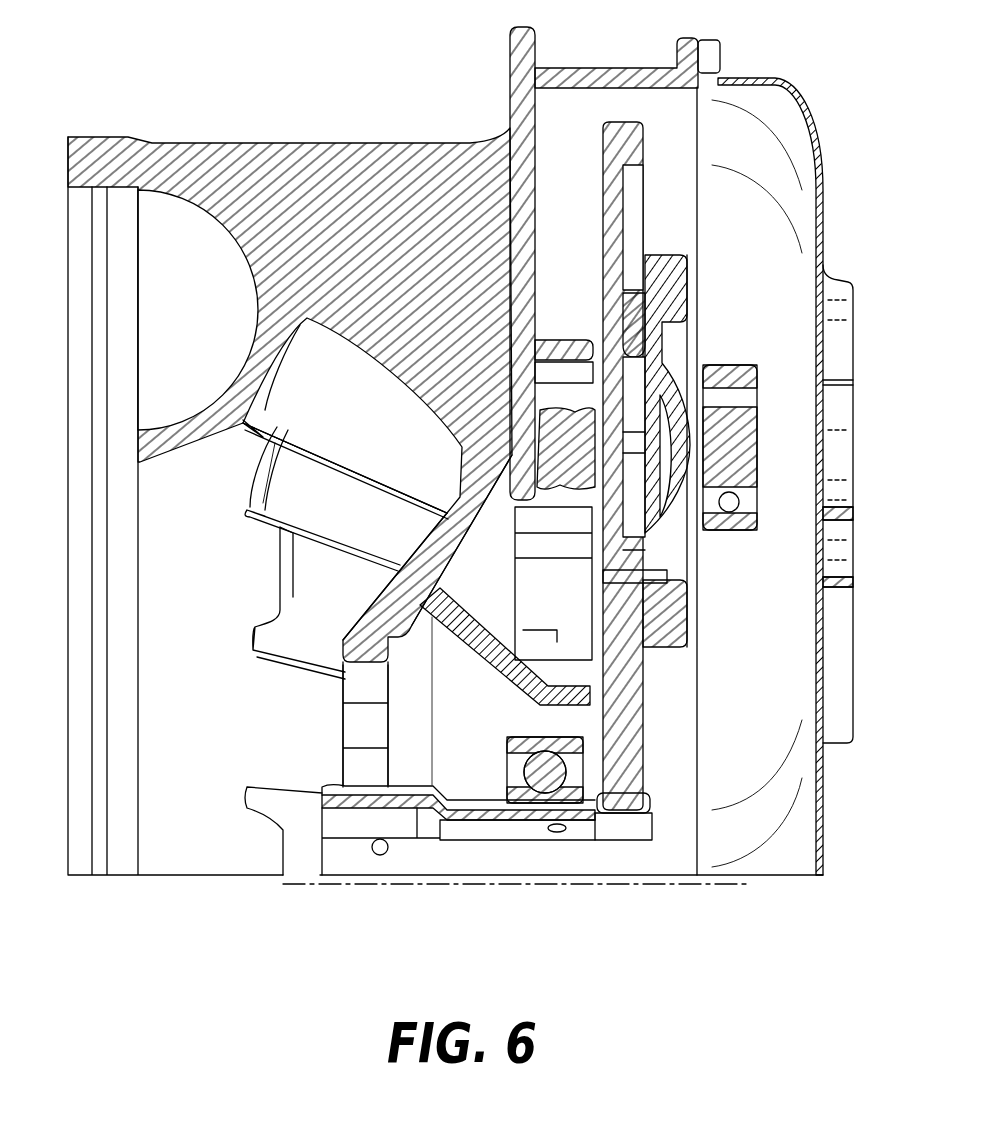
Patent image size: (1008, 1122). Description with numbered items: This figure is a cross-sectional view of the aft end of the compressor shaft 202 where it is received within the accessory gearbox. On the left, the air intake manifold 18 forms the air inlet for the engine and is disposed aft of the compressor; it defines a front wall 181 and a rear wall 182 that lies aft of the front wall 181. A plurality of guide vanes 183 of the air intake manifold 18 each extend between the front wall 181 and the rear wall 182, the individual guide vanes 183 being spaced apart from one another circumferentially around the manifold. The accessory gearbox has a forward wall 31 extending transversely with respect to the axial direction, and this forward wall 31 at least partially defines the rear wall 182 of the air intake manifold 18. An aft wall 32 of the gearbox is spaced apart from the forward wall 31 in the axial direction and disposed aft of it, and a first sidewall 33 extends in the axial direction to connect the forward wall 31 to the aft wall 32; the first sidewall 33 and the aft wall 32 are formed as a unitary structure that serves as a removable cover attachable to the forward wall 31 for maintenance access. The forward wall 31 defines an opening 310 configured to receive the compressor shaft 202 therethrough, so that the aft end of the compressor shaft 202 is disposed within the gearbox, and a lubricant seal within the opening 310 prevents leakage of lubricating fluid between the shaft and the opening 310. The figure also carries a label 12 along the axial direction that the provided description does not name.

The rotation axis 12 is at (503, 888).
The air intake manifold 18 is at (390, 108).
The front wall 181 is at (470, 513).
The rear wall 182 is at (273, 367).
The guide vanes 183 is at (300, 585).
The forward wall 31 is at (530, 150).
The opening 310 is at (371, 722).
The aft wall 32 is at (768, 87).
The first sidewall 33 is at (616, 68).
The compressor shaft 202 is at (340, 790).